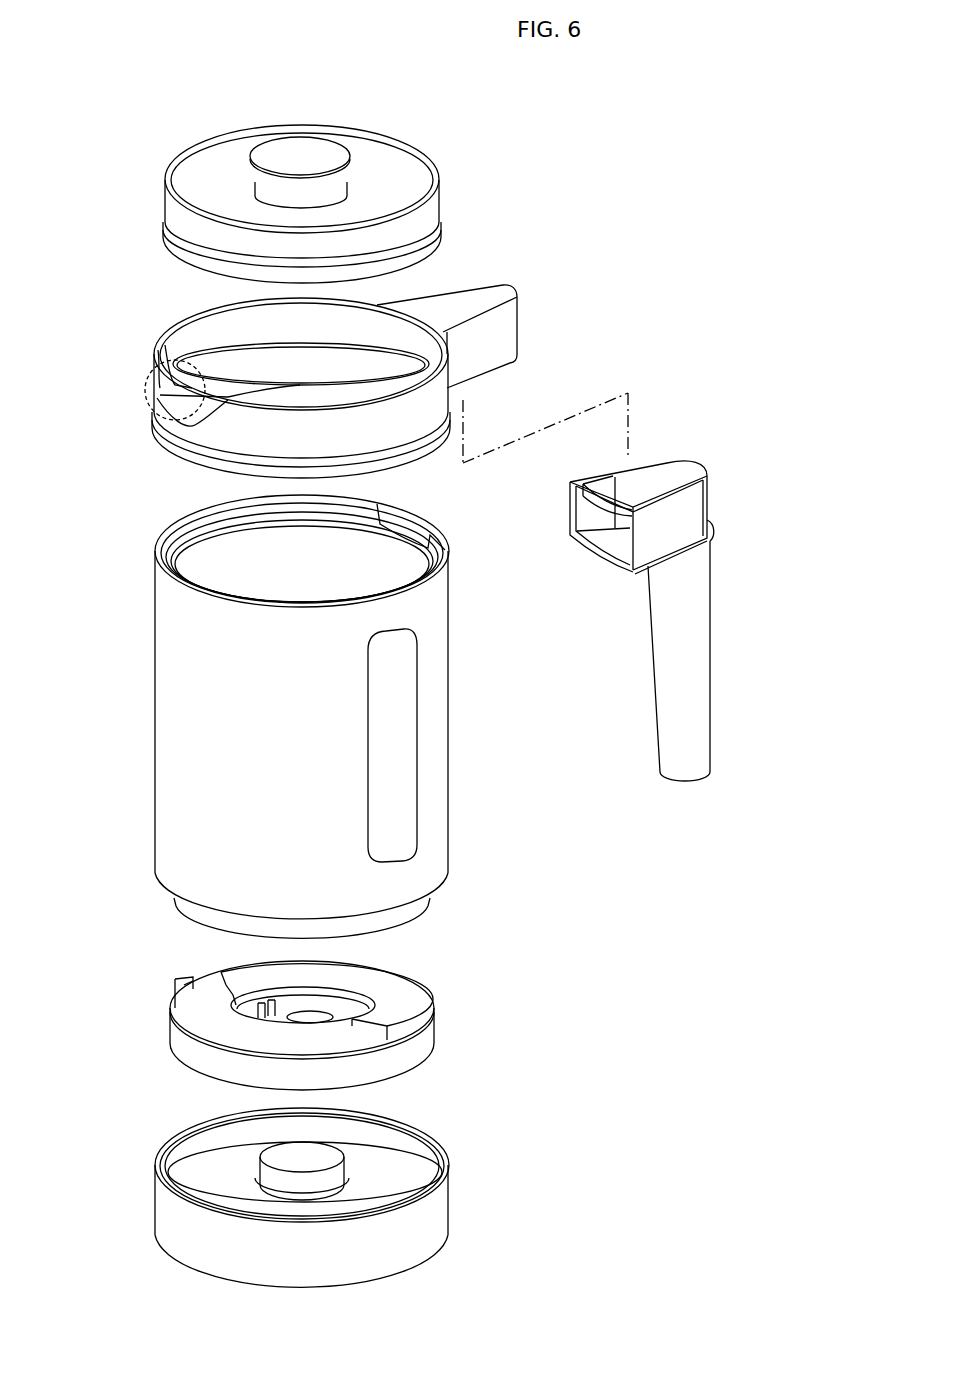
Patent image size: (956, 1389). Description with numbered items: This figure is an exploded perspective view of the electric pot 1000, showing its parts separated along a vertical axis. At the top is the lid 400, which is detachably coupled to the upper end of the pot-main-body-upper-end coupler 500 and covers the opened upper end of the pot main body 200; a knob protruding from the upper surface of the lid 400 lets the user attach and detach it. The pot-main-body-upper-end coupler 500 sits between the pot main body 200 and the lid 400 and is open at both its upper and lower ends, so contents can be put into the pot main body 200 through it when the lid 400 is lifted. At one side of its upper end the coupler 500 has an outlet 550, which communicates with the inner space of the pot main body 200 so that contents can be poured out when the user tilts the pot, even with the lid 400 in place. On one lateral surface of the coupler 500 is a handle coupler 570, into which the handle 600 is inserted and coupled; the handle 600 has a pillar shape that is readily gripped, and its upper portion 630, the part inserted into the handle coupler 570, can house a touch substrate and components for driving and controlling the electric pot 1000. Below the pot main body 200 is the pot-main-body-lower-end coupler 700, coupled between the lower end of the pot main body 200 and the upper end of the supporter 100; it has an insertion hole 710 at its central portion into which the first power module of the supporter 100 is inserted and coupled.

The electric pot 1000 is at (132, 100).
The supporter 100 is at (173, 1214).
The pot main body 200 is at (176, 740).
The lid 400 is at (168, 203).
The pot-main-body-upper-end coupler 500 is at (166, 325).
The outlet 550 is at (157, 420).
The handle coupler 570 is at (481, 292).
The handle 600 is at (702, 603).
The upper portion 630 is at (692, 503).
The pot-main-body-lower-end coupler 700 is at (175, 1032).
The insertion hole 710 is at (300, 1017).